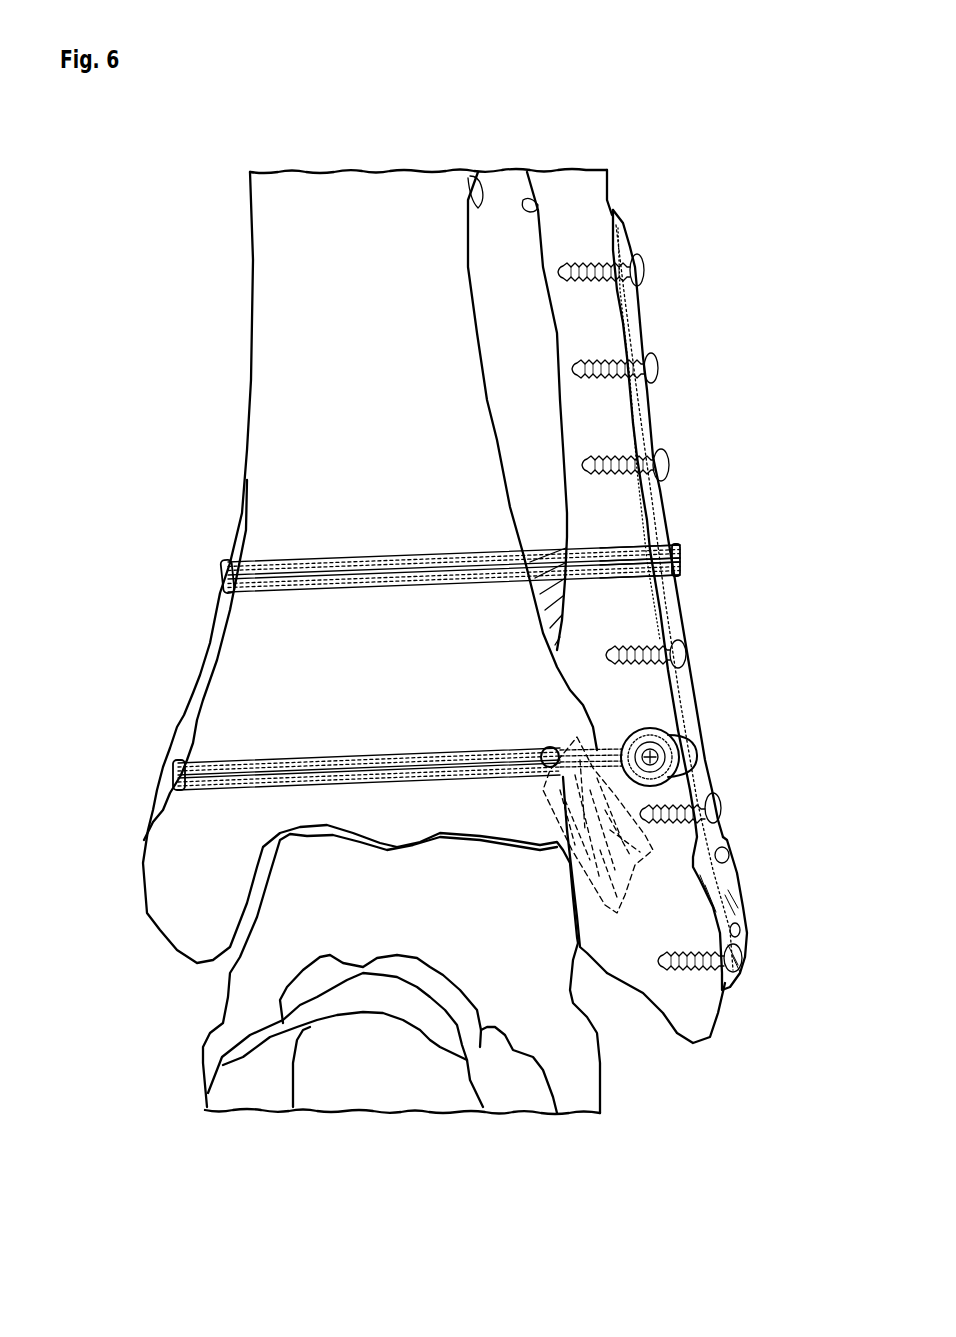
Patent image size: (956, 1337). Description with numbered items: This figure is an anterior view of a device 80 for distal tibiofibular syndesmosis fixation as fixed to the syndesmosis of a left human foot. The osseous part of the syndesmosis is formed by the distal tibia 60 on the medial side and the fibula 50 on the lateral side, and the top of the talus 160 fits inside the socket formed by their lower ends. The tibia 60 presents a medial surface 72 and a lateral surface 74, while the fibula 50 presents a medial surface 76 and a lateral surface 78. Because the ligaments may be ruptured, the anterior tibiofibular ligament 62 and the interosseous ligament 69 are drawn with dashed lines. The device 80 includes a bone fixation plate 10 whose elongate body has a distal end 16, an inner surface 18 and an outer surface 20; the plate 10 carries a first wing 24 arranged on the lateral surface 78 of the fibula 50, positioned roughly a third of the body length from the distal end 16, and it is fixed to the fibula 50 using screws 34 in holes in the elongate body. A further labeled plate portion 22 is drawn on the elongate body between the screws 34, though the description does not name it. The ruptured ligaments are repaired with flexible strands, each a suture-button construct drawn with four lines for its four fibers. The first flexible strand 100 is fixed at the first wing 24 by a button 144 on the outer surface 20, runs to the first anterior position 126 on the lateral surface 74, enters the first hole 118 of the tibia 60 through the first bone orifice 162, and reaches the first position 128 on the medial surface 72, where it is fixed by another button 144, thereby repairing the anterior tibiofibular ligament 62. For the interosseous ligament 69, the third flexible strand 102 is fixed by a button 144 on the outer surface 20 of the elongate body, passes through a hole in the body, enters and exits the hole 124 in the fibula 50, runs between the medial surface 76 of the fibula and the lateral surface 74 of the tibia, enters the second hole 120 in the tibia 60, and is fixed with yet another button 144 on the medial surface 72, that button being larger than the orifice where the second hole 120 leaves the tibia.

The bone fixation plate 10 is at (650, 230).
The distal end 16 is at (725, 993).
The inner surface 18 is at (625, 326).
The outer surface 20 is at (650, 318).
The plate shaft 22 is at (665, 607).
The first wing 24 is at (626, 732).
The screws 34 is at (645, 276).
The fibula 50 is at (605, 420).
The distal tibia 60 is at (250, 635).
The anterior tibiofibular ligament 62 is at (548, 793).
The interosseous ligament 69 is at (538, 600).
The medial surface 72 is at (250, 216).
The lateral surface 74 is at (478, 175).
The medial surface 76 is at (528, 172).
The lateral surface 78 is at (608, 186).
The device for distal tibiofibular syndesmosis fixation 80 is at (752, 318).
The first flexible strand 100 is at (362, 752).
The third flexible strand 102 is at (386, 552).
The first hole 118 is at (397, 780).
The second hole 120 is at (440, 552).
The hole 124 is at (606, 547).
The first anterior position 126 is at (563, 750).
The first position 128 is at (183, 765).
The button 144 is at (680, 556).
The talus 160 is at (517, 1007).
The first bone orifice 162 is at (537, 744).